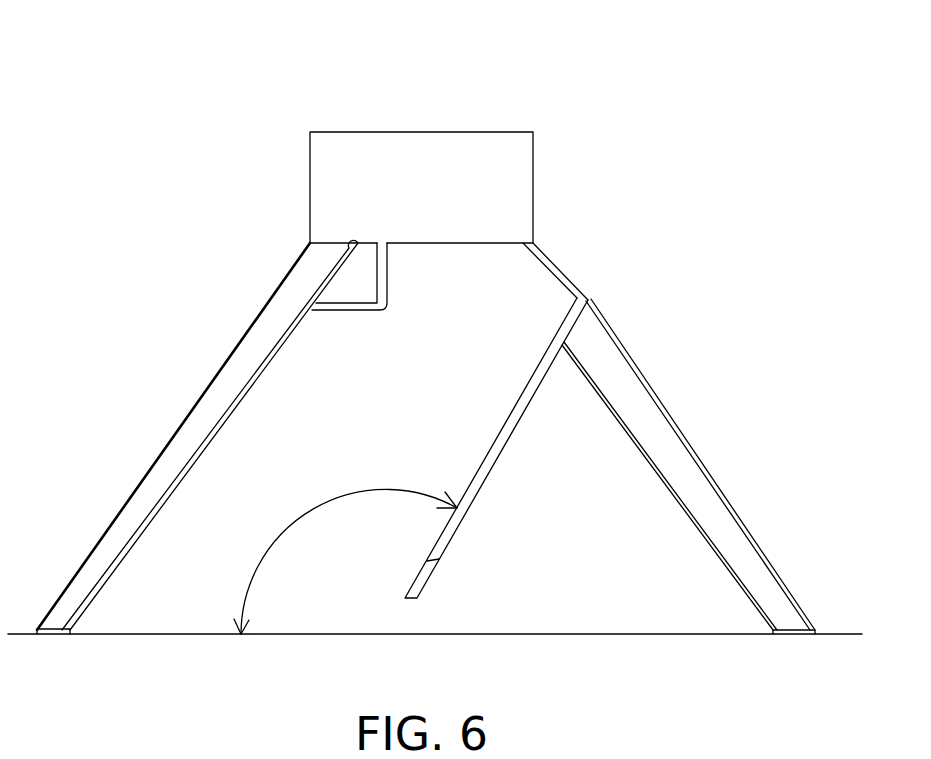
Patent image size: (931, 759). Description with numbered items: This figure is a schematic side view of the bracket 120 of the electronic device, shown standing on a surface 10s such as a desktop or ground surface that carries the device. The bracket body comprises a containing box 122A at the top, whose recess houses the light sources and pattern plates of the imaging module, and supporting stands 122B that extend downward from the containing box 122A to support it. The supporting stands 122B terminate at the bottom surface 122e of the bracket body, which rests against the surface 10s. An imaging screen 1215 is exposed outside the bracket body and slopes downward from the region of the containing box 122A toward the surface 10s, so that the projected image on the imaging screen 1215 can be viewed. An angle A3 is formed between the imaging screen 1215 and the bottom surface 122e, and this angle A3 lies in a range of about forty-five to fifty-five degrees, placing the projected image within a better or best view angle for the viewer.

The bracket 120 is at (330, 99).
The containing box 122A is at (310, 188).
The supporting stand 122B is at (421, 470).
The bottom surface of the bracket body 122e is at (52, 636).
The imaging screen 1215 is at (455, 540).
The surface 10s is at (838, 633).
The angle A3 is at (345, 561).